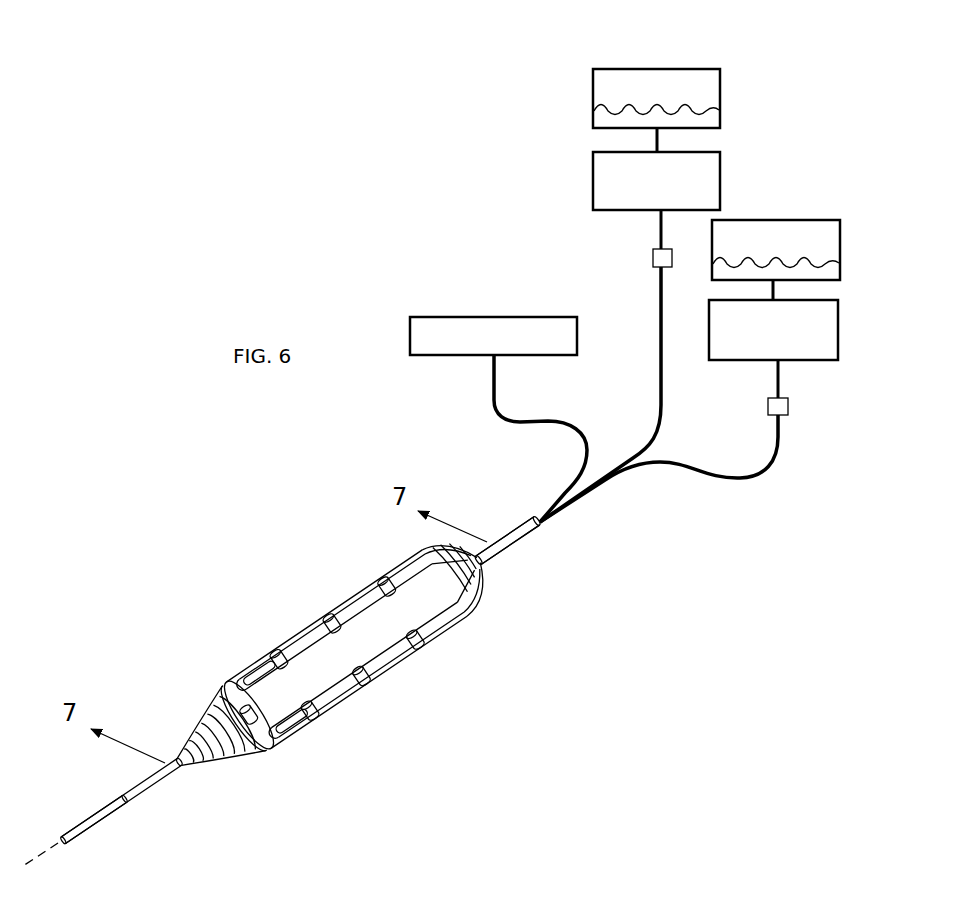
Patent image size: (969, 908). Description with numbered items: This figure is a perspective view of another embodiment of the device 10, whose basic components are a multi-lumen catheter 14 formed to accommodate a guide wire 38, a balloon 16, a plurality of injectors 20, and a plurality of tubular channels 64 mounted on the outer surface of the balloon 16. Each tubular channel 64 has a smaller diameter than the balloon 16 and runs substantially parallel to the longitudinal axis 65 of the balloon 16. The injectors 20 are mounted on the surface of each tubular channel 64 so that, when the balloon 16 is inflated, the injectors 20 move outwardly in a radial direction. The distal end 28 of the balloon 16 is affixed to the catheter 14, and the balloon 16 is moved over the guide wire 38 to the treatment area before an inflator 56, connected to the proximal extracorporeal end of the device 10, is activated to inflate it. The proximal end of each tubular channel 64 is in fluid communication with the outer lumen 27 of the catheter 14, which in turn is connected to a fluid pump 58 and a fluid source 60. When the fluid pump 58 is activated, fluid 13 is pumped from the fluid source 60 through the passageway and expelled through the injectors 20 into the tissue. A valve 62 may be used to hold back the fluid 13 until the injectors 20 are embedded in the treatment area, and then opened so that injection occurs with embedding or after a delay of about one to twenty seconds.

The device 10 is at (233, 538).
The fluid 13 is at (693, 113).
The multi-lumen catheter 14 is at (157, 782).
The balloon 16 is at (237, 742).
The injectors 20 is at (280, 655).
The outer lumen 27 is at (517, 520).
The distal end 28 is at (225, 700).
The guide wire 38 is at (95, 825).
The inflator 56 is at (512, 312).
The fluid pump 58 is at (705, 138).
The fluid source 60 is at (634, 62).
The valve 62 is at (652, 256).
The tubular channels 64 is at (265, 670).
The longitudinal axis 65 is at (45, 858).